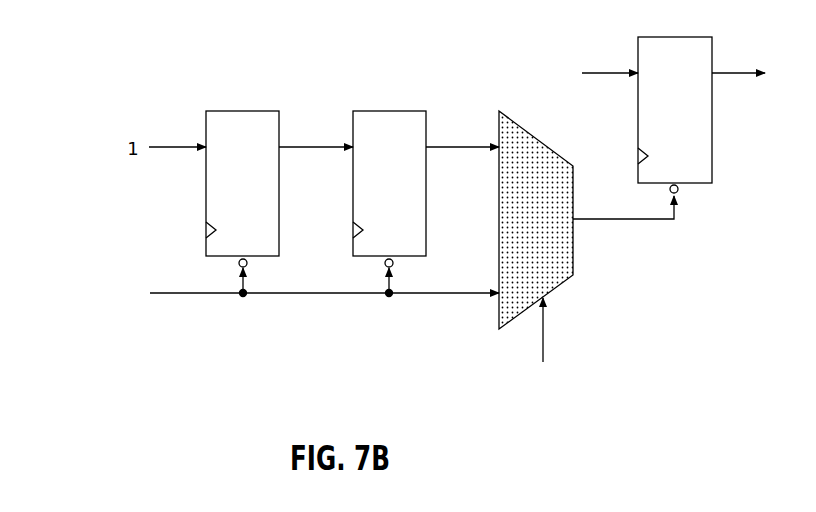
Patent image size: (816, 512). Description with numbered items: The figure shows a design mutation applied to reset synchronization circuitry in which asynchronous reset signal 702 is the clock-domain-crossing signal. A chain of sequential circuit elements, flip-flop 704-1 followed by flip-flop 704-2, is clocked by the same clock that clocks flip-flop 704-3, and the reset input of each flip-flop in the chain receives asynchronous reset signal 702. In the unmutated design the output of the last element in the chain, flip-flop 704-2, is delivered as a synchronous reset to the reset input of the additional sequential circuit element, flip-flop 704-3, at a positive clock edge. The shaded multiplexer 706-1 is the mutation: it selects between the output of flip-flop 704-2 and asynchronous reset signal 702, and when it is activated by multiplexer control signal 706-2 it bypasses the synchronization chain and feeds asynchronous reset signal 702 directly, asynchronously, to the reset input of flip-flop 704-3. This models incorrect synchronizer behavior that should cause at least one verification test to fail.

The asynchronous reset signal 702 is at (266, 294).
The flip-flop 704-1 is at (242, 189).
The flip-flop 704-2 is at (389, 189).
The flip-flop 704-3 is at (675, 115).
The multiplexer 706-1 is at (536, 220).
The multiplexer control signal 706-2 is at (543, 362).